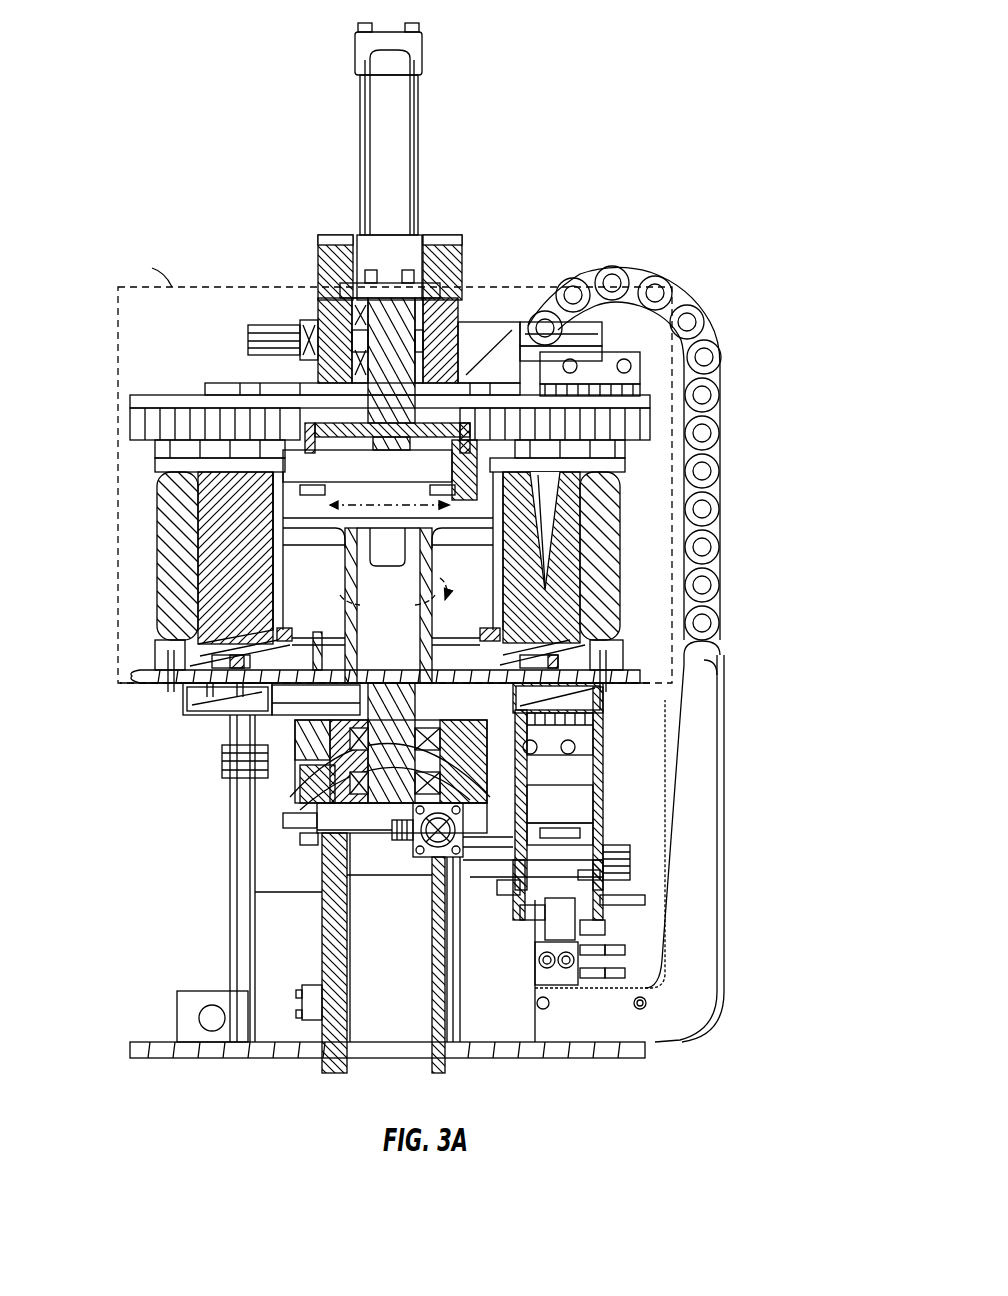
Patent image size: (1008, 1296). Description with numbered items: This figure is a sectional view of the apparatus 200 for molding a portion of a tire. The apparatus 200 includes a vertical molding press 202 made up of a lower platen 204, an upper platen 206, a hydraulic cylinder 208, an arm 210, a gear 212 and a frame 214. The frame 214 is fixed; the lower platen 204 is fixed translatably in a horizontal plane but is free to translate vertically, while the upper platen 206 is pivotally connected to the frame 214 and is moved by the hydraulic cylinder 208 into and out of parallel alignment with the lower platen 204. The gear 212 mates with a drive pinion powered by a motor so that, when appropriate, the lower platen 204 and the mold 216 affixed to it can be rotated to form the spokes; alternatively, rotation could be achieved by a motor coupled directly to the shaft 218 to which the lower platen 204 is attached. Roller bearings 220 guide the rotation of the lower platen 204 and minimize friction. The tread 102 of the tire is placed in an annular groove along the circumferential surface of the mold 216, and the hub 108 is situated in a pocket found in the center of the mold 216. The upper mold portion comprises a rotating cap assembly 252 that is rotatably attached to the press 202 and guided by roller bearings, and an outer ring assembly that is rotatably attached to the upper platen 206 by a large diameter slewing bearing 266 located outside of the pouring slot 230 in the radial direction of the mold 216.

The apparatus 200 is at (648, 98).
The hydraulic cylinder 208 is at (380, 150).
The rotating cap assembly 252 is at (388, 288).
The vertical molding press 202 is at (483, 316).
The arm 210 is at (317, 318).
The upper platen 206 is at (250, 388).
The slewing bearing 266 is at (205, 398).
The pouring slot 230 is at (322, 466).
The mold 216 is at (592, 492).
The tread 102 is at (150, 538).
The hub 108 is at (287, 576).
The shaft 218 is at (386, 668).
The lower platen 204 is at (148, 680).
The gear 212 is at (138, 685).
The roller bearings 220 is at (290, 795).
The frame 214 is at (240, 830).